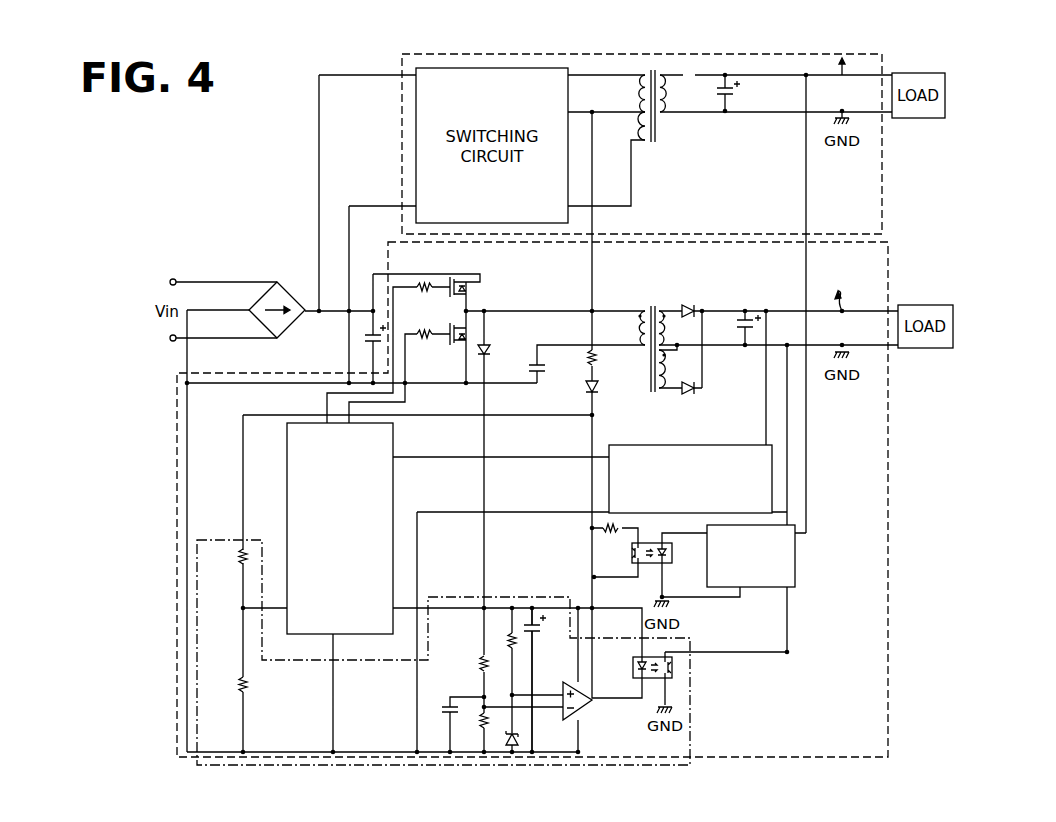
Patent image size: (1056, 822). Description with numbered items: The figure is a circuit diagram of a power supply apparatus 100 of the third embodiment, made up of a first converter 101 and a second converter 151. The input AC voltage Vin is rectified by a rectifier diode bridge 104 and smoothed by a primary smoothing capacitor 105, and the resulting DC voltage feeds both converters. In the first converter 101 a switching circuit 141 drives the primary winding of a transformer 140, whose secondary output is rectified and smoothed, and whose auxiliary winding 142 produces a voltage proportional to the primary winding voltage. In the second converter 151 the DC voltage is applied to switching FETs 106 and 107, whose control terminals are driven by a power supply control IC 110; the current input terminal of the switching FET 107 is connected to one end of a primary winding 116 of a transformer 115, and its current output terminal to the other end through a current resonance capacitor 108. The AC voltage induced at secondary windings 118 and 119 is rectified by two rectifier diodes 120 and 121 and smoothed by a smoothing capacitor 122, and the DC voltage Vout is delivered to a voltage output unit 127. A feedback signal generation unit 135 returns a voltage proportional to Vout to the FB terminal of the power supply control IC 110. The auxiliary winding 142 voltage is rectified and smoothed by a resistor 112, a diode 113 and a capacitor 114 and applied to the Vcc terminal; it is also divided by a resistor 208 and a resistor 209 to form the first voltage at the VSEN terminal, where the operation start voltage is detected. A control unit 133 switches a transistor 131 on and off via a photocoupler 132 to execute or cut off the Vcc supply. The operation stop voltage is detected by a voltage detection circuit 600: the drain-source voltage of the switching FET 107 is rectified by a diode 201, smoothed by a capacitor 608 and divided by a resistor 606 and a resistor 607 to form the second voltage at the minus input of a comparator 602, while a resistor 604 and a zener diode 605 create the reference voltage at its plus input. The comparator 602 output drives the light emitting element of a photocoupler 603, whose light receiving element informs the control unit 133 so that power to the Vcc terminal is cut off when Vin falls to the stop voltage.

The power supply apparatus 100 is at (962, 96).
The first converter 101 is at (884, 155).
The rectifier diode bridge 104 is at (291, 269).
The primary smoothing capacitor 105 is at (363, 336).
The switching FET 106 is at (450, 277).
The switching FET 107 is at (447, 345).
The current resonance capacitor 108 is at (540, 372).
The power supply control IC 110 is at (394, 485).
The resistor 112 is at (597, 357).
The diode 113 is at (597, 393).
The capacitor 114 is at (538, 633).
The transformer 115 is at (644, 311).
The primary winding 116 is at (645, 329).
The secondary winding 118 is at (663, 311).
The secondary winding 119 is at (665, 362).
The rectifier diode 120 is at (688, 305).
The rectifier diode 121 is at (690, 396).
The smoothing capacitor 122 is at (745, 318).
The voltage output unit 127 is at (858, 292).
The transistor 131 is at (596, 577).
The photocoupler 132 is at (640, 566).
The control unit 133 is at (770, 589).
The feedback signal generation unit 135 is at (668, 444).
The transformer 140 is at (635, 121).
The switching circuit 141 is at (568, 90).
The auxiliary winding 142 is at (650, 113).
The second converter 151 is at (890, 275).
The diode 201 is at (485, 344).
The resistor 208 is at (240, 563).
The resistor 209 is at (248, 685).
The voltage detection circuit 600 is at (692, 727).
The comparator 602 is at (585, 703).
The photocoupler 603 is at (635, 672).
The resistor 604 is at (510, 630).
The zener diode 605 is at (519, 738).
The resistor 606 is at (482, 656).
The resistor 607 is at (482, 710).
The capacitor 608 is at (445, 707).